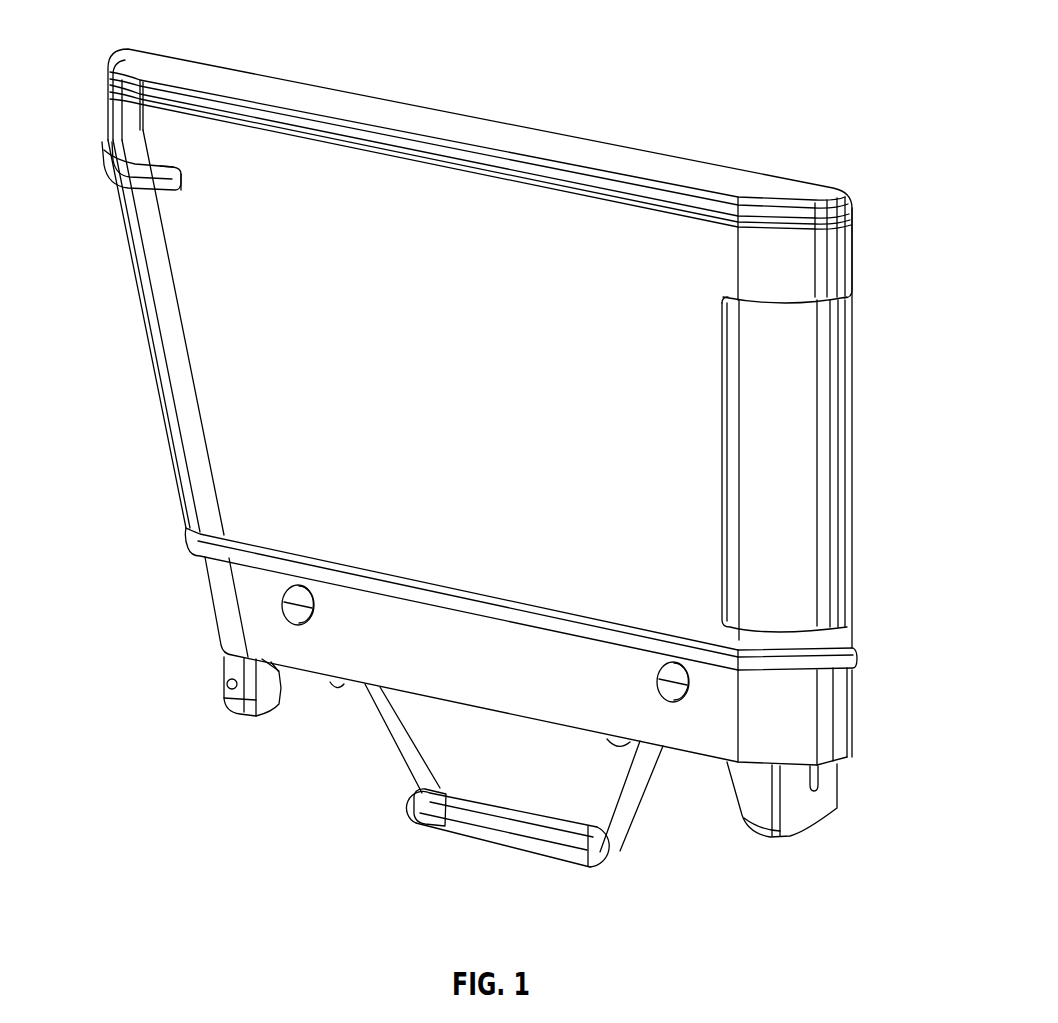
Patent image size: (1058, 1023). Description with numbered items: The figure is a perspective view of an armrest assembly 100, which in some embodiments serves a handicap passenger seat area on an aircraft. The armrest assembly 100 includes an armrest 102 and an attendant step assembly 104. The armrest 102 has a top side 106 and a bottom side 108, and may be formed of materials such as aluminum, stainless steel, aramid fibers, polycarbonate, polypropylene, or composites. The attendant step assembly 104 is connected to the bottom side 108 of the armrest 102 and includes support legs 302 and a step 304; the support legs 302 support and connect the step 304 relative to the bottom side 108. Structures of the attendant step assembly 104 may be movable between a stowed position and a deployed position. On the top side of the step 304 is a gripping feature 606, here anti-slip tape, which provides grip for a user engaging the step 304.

The armrest assembly 100 is at (501, 458).
The armrest 102 is at (210, 308).
The attendant step assembly 104 is at (498, 798).
The top side 106 is at (533, 140).
The bottom side 108 is at (445, 677).
The support legs 302 is at (370, 688).
The step 304 is at (523, 830).
The gripping feature 606 is at (428, 826).